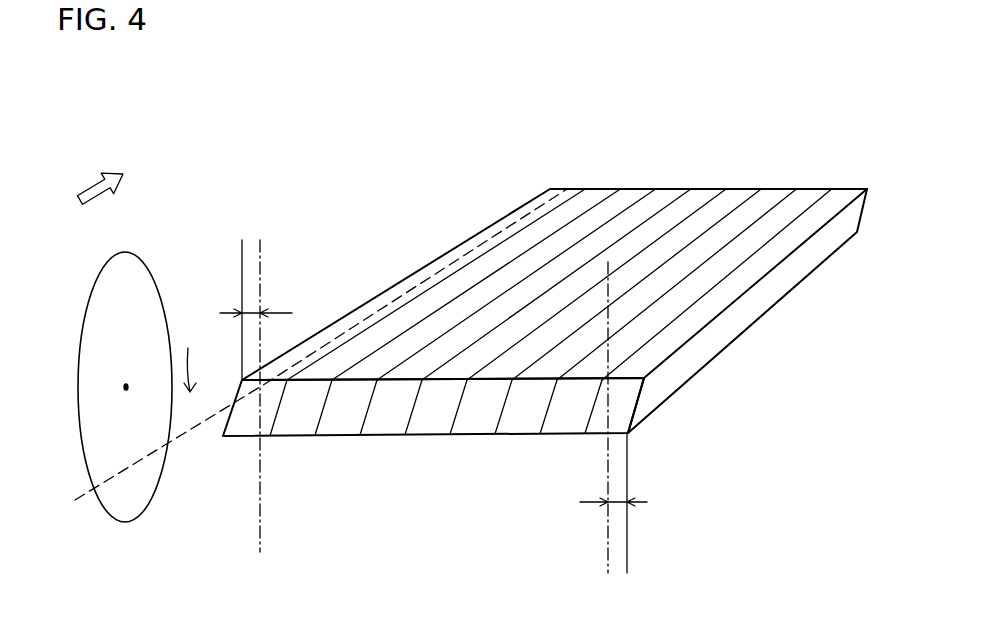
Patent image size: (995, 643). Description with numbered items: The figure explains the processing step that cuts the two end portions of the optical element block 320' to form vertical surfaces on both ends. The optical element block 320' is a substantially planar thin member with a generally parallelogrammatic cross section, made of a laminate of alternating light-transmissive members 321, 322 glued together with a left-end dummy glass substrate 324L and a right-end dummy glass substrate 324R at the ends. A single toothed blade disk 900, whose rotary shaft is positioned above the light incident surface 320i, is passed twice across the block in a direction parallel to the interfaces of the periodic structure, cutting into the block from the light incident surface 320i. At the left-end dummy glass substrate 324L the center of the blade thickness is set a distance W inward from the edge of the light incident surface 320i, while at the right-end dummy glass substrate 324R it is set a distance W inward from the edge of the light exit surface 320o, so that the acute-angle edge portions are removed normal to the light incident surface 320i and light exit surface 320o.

The toothed blade disk 900 is at (103, 303).
The optical element block 320' is at (545, 312).
The light incident surface 320i is at (806, 187).
The light exit surface 320o is at (806, 290).
The light-transmissive member 321 is at (292, 437).
The light-transmissive member 322 is at (338, 437).
The left-end dummy glass substrate 324L is at (243, 437).
The right-end dummy glass substrate 324R is at (622, 402).